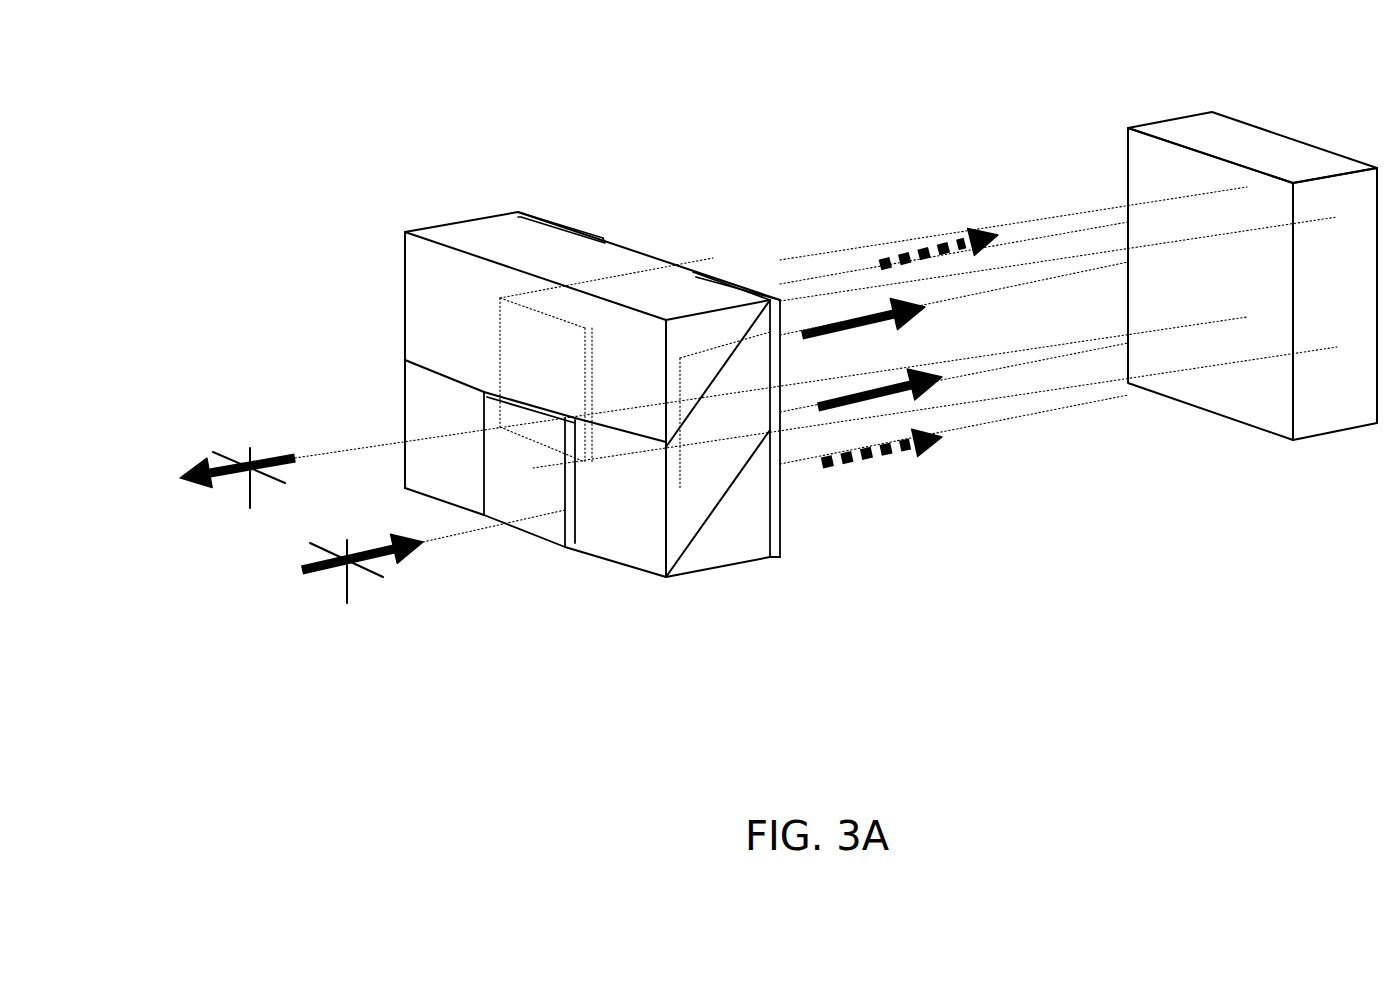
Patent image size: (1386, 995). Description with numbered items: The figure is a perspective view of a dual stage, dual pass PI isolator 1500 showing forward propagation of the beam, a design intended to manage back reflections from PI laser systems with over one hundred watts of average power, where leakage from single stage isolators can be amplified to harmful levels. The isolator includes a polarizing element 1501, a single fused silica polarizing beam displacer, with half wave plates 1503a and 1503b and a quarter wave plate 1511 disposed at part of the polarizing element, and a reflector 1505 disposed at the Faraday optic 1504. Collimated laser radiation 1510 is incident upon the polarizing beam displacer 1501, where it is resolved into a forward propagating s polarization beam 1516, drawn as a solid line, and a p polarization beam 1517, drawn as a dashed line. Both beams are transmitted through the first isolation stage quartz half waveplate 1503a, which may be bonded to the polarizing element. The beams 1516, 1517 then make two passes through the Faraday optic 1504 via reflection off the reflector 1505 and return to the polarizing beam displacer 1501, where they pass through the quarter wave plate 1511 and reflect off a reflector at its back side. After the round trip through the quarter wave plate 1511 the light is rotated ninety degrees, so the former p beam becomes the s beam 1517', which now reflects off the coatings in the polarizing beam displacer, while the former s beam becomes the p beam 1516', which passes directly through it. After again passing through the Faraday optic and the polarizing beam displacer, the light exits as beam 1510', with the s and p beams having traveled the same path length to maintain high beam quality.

The dual stage, dual pass PI isolator 1500 is at (680, 640).
The polarizing element 1501 is at (415, 218).
The half wave plate 1503a is at (785, 535).
The half wave plate 1503b is at (563, 223).
The Faraday optic 1504 is at (1143, 152).
The reflector 1505 is at (1345, 378).
The collimated laser radiation 1510 is at (307, 551).
The exit beam 1510' is at (196, 454).
The quarter wave plate 1511 is at (530, 493).
The s polarization beam 1516 is at (848, 258).
The p beam 1516' is at (965, 426).
The p polarization beam 1517 is at (882, 466).
The s beam 1517' is at (939, 221).